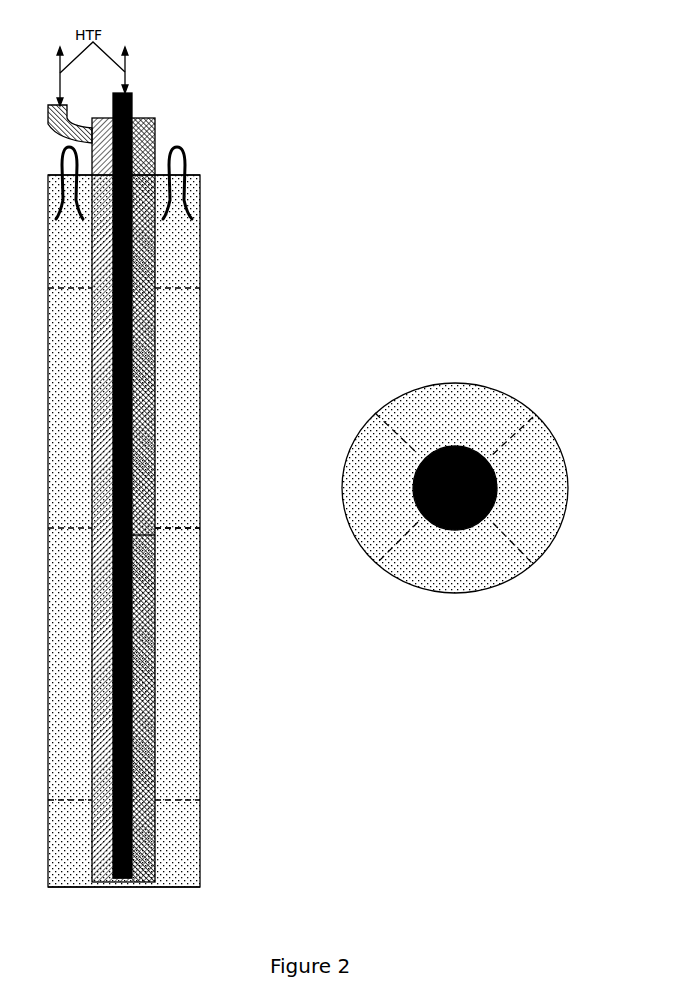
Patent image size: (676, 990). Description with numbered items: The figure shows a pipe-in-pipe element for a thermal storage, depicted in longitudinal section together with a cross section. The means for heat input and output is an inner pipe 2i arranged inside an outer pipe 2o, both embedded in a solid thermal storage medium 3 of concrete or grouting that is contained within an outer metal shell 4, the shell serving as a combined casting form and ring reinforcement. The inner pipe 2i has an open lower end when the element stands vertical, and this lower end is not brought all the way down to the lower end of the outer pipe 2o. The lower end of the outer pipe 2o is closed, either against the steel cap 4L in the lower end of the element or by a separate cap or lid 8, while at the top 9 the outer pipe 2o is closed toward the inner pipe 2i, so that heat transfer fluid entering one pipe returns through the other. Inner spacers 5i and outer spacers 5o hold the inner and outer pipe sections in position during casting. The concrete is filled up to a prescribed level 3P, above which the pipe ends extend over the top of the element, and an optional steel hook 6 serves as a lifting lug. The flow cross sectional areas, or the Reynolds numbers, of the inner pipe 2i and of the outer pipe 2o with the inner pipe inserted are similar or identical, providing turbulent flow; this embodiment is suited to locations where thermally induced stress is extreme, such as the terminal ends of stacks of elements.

The outer pipe 2o is at (412, 471).
The inner pipe 2i is at (412, 485).
The solid thermal storage medium 3 is at (433, 428).
The prescribed level 3P is at (192, 175).
The outer metal shell 4 is at (433, 385).
The steel cap 4L is at (200, 865).
The outer spacers 5o is at (413, 527).
The inner spacers 5i is at (443, 527).
The steel hook 6 is at (200, 187).
The separate cap or lid 8 is at (155, 870).
The top 9 is at (140, 118).